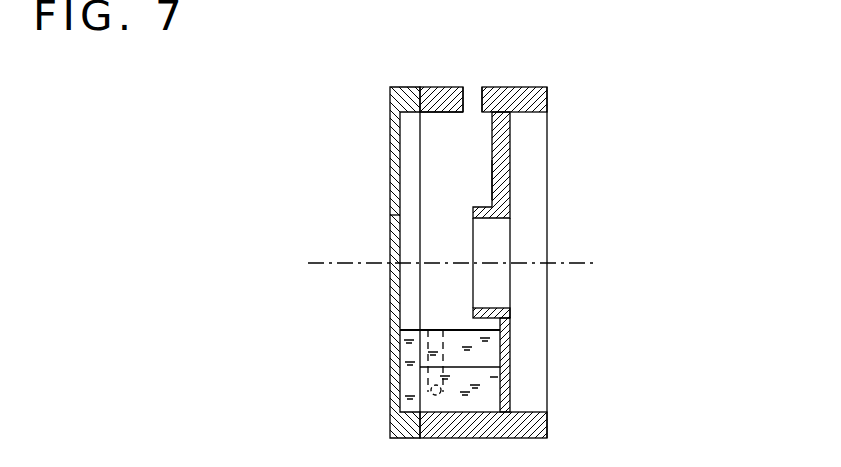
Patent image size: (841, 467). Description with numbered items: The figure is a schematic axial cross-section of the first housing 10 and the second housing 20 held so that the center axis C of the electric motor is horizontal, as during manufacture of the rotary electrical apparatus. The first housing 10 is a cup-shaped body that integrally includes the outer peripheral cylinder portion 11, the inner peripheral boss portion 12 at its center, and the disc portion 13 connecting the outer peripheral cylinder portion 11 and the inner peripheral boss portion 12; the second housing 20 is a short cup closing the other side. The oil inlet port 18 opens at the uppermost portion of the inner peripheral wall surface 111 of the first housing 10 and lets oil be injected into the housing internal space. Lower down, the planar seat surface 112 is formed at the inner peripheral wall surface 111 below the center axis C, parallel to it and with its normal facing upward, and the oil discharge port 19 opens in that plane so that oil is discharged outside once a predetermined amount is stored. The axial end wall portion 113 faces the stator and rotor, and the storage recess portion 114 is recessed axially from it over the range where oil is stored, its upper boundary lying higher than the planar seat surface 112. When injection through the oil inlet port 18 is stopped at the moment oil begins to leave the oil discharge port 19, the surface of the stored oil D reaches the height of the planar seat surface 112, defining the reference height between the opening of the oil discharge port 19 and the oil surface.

The first housing 10 is at (540, 87).
The outer peripheral cylinder portion 11 is at (452, 87).
The inner peripheral wall surface 111 is at (447, 113).
The oil inlet port 18 is at (469, 113).
The second housing 20 is at (390, 100).
The disc portion 13 is at (494, 167).
The axial end wall portion 113 is at (493, 170).
The inner peripheral boss portion 12 is at (484, 218).
The planar seat surface 112 is at (460, 328).
The storage recess portion 114 is at (500, 346).
The oil discharge port 19 is at (435, 328).
The oil D is at (410, 386).
The center axis C is at (334, 263).